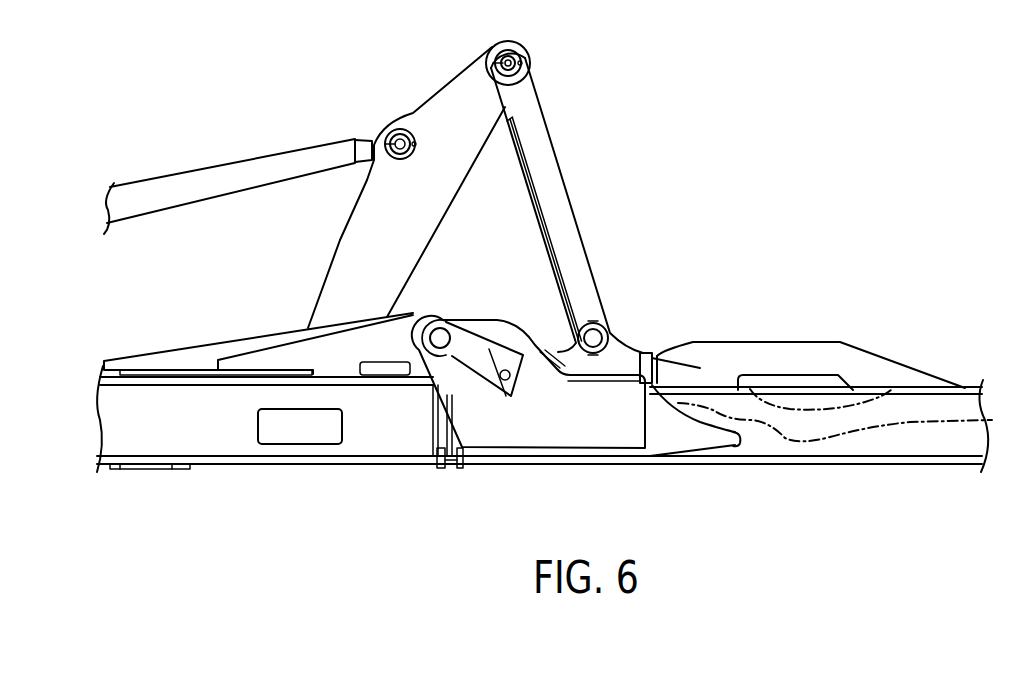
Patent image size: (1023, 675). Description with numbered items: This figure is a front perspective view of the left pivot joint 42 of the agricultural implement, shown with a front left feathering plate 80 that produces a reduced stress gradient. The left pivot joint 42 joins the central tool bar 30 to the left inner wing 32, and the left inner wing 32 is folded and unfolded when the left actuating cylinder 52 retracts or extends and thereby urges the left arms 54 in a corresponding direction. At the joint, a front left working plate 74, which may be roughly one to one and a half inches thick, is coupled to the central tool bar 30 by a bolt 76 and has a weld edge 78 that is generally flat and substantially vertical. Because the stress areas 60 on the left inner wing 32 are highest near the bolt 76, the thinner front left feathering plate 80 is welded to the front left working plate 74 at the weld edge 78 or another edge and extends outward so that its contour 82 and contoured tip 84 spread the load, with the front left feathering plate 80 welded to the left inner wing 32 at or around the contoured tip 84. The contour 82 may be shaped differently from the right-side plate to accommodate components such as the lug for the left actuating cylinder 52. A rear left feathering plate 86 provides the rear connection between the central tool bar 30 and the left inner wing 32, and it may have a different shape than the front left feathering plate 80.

The central tool bar 30 is at (218, 442).
The left inner wing 32 is at (940, 450).
The left pivot joint 42 is at (454, 512).
The left actuating cylinder 52 is at (227, 168).
The left arms 54 is at (513, 63).
The stress areas 60 is at (863, 390).
The front left working plate 74 is at (522, 440).
The bolt 76 is at (441, 328).
The weld edge 78 is at (640, 413).
The front left feathering plate 80 is at (690, 443).
The contour 82 is at (682, 422).
The contoured tip 84 is at (738, 440).
The rear left feathering plate 86 is at (768, 340).